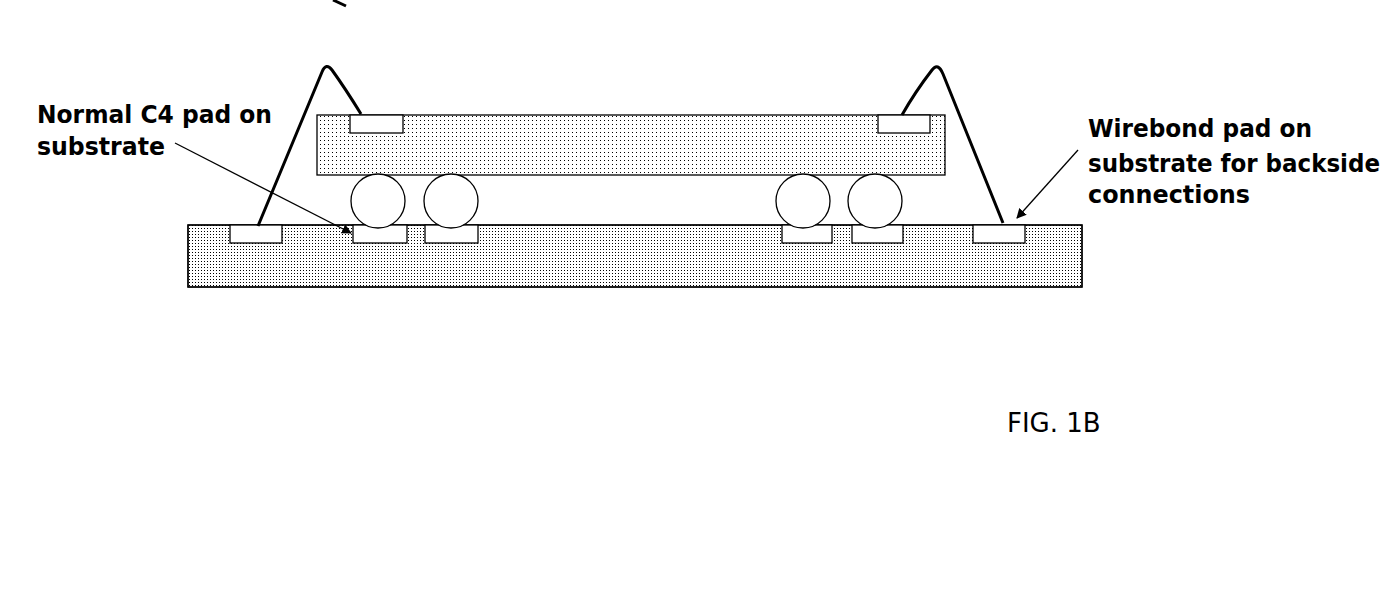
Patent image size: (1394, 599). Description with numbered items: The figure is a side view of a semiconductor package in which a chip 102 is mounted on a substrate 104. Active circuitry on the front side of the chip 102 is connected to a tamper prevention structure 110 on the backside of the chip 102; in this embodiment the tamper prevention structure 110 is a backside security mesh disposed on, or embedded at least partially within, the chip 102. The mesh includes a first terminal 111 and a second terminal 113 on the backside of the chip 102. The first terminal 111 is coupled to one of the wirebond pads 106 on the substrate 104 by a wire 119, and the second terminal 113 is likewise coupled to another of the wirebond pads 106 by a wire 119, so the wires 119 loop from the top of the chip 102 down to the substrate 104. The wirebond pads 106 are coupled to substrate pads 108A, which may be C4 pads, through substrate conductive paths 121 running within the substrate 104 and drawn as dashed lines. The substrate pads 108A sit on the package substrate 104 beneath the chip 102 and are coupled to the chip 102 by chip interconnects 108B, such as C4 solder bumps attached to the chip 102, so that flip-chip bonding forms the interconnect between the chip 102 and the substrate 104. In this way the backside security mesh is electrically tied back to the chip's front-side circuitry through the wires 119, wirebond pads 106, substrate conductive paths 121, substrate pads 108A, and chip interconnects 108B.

The chip 102 is at (530, 115).
The substrate 104 is at (675, 260).
The wirebond pads 106 is at (240, 225).
The substrate pads 108A is at (385, 232).
The chip interconnects 108B is at (393, 205).
The tamper prevention structure 110 is at (659, 209).
The first terminal 111 is at (383, 115).
The second terminal 113 is at (893, 120).
The wire 119 is at (293, 112).
The substrate conductive paths 121 is at (313, 277).